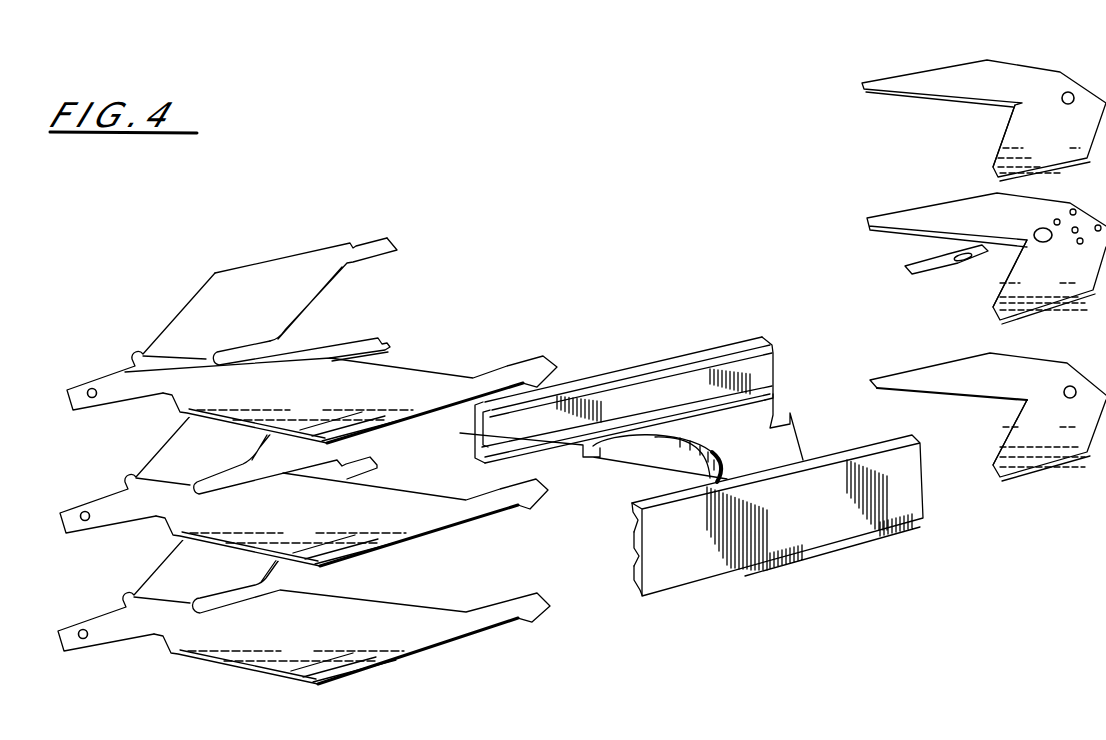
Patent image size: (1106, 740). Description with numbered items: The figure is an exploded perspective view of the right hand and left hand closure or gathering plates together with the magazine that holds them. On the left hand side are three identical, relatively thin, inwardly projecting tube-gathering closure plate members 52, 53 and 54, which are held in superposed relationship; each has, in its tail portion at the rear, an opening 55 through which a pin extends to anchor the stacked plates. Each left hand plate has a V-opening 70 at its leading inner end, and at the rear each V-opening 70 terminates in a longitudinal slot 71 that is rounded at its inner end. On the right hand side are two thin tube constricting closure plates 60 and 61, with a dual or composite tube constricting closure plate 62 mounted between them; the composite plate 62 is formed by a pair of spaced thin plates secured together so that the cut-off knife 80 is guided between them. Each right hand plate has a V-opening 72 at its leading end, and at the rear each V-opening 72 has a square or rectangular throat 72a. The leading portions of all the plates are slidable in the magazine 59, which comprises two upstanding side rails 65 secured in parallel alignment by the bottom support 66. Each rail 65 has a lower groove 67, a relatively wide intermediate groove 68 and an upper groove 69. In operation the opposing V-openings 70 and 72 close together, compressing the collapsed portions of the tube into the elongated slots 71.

The tube-gathering closure plate member 52 is at (247, 272).
The tube-gathering closure plate member 53 is at (153, 441).
The tube-gathering closure plate member 54 is at (160, 565).
The opening 55 is at (94, 388).
The magazine 59 is at (680, 341).
The tube constricting closure plate 60 is at (922, 75).
The tube constricting closure plate 61 is at (927, 363).
The composite tube constricting closure plate 62 is at (945, 208).
The side rail 65 is at (728, 346).
The bottom support 66 is at (795, 416).
The lower groove 67 is at (562, 437).
The intermediate groove 68 is at (508, 422).
The upper groove 69 is at (778, 349).
The V-opening 70 is at (333, 277).
The longitudinal slot 71 is at (292, 347).
The V-opening 72 is at (965, 107).
The rectangular throat 72a is at (1018, 105).
The cut-off knife 80 is at (927, 278).